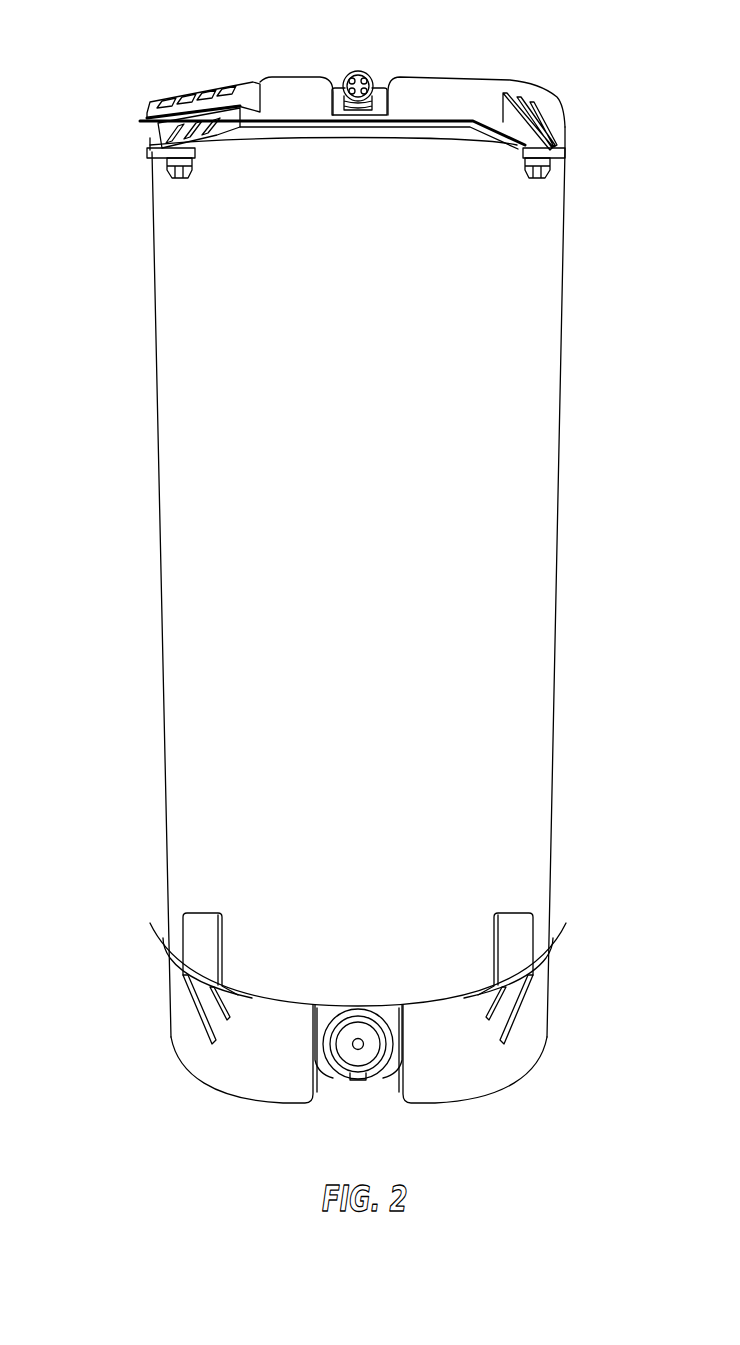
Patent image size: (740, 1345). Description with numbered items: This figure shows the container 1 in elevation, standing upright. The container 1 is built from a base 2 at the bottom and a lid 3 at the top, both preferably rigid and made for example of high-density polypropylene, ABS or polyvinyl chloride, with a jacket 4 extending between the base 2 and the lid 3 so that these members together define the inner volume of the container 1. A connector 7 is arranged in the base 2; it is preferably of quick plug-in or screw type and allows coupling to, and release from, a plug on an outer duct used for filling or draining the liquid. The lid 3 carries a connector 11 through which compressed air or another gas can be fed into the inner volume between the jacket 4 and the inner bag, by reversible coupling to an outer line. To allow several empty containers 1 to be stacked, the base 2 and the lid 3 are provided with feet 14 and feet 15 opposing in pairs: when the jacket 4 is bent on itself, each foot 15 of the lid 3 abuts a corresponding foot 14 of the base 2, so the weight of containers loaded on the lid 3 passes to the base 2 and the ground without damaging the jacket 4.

The container 1 is at (118, 551).
The base 2 is at (530, 1043).
The lid 3 is at (543, 110).
The jacket 4 is at (523, 425).
The connector 7 is at (352, 1058).
The connector 11 is at (358, 72).
The feet 14 is at (198, 945).
The feet 15 is at (152, 165).